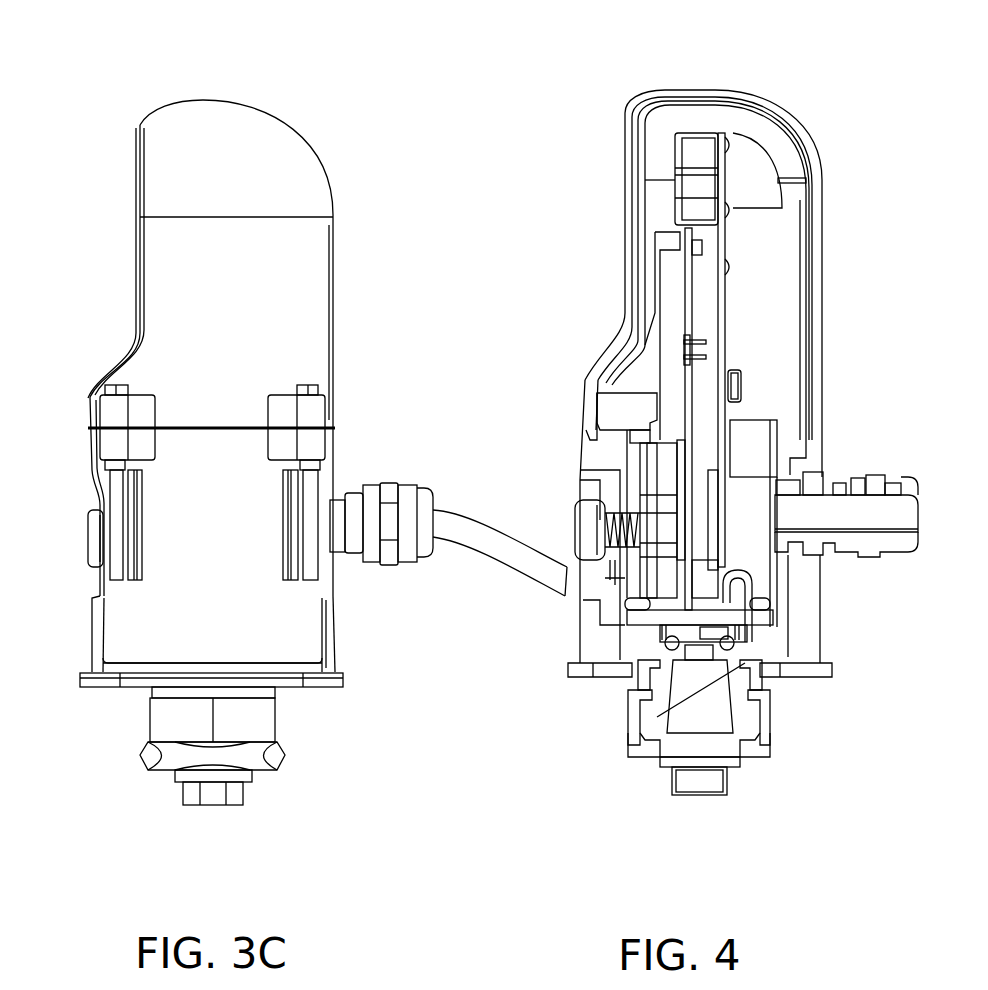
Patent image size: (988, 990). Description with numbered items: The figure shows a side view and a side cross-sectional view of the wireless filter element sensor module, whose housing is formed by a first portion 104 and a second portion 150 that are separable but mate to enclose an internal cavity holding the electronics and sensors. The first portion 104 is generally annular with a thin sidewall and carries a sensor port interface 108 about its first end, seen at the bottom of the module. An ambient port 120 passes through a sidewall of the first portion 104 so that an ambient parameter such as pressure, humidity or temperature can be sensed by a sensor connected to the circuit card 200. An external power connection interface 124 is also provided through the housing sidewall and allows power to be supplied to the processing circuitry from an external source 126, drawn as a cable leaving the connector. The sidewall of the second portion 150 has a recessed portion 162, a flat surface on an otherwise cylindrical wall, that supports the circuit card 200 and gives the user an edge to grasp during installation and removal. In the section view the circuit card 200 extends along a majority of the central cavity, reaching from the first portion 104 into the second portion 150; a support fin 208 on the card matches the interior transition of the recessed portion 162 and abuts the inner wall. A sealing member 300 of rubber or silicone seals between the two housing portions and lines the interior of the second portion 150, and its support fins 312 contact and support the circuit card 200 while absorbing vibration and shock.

In FIG. 3C, the first portion 104 is at (310, 663).
In FIG. 4, the first portion 104 is at (807, 652).
In FIG. 3C, the sensor port interface 108 is at (237, 797).
In FIG. 4, the sensor port interface 108 is at (727, 793).
In FIG. 3C, the ambient port 120 is at (95, 556).
In FIG. 4, the ambient port 120 is at (577, 533).
In FIG. 3C, the external power connection interface 124 is at (380, 482).
In FIG. 4, the external power connection interface 124 is at (878, 480).
In FIG. 3C, the external source 126 is at (458, 522).
In FIG. 3C, the second portion 150 is at (288, 162).
In FIG. 4, the second portion 150 is at (745, 107).
In FIG. 3C, the recessed portion 162 is at (140, 188).
In FIG. 4, the recessed portion 162 is at (632, 170).
In FIG. 4, the circuit card 200 is at (713, 325).
In FIG. 4, the support fin 208 is at (620, 331).
In FIG. 4, the sealing member 300 is at (797, 158).
In FIG. 4, the support fins 312 is at (755, 192).